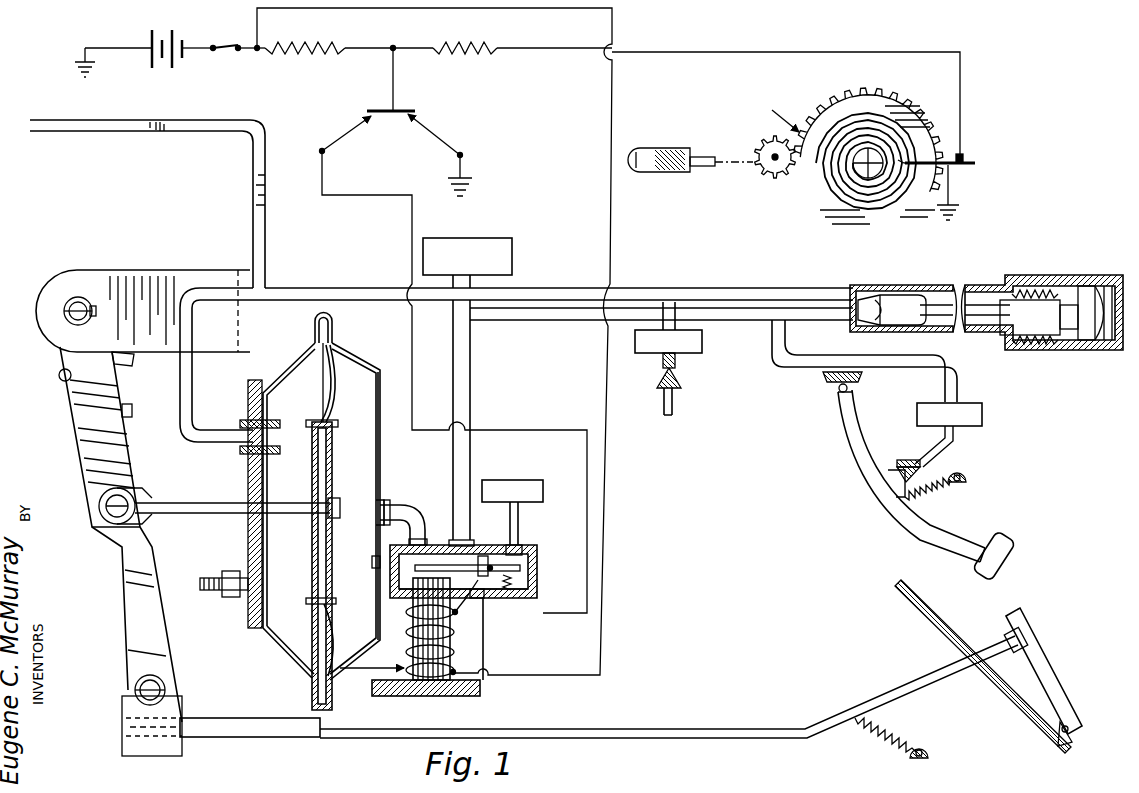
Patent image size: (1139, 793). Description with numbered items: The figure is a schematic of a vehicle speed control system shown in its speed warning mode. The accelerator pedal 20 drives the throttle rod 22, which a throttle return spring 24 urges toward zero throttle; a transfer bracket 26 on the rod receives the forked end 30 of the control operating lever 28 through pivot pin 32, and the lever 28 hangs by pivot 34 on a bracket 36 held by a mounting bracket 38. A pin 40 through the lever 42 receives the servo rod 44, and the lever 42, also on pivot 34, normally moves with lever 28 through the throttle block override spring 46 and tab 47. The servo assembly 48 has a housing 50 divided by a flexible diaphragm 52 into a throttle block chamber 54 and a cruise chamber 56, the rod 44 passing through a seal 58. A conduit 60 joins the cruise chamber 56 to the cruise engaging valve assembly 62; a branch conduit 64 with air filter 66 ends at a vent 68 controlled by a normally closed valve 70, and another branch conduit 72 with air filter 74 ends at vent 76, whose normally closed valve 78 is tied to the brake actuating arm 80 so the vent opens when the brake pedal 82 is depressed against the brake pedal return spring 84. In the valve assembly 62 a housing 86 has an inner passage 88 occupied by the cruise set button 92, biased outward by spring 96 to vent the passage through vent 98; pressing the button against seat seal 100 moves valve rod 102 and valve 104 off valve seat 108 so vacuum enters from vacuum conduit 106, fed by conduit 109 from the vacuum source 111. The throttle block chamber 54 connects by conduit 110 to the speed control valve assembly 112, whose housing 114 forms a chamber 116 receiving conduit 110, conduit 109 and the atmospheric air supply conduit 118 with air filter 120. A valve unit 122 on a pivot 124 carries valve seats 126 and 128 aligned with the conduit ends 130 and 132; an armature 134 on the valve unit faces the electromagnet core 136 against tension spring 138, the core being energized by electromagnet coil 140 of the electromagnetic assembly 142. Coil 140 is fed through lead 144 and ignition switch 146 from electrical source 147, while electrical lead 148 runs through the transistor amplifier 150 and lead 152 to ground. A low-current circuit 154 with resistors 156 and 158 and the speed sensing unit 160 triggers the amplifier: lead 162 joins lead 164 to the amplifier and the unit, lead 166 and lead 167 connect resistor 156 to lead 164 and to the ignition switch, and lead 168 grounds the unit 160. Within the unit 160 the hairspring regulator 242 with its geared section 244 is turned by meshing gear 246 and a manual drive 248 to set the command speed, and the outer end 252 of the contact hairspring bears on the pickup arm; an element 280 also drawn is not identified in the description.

The accelerator pedal 20 is at (1032, 641).
The throttle rod 22 is at (882, 702).
The throttle return spring 24 is at (878, 741).
The transfer bracket 26 is at (178, 713).
The control operating lever 28 is at (160, 631).
The forked end 30 is at (182, 718).
The pivot pin 32 is at (158, 684).
The pivot pin 34 is at (70, 302).
The bracket 36 is at (197, 270).
The mounting bracket 38 is at (256, 181).
The pin 40 is at (110, 494).
The lever 42 is at (95, 438).
The servo rod 44 is at (196, 520).
The throttle block override spring 46 is at (130, 366).
The tab 47 is at (133, 416).
The servo assembly 48 is at (360, 351).
The housing 50 is at (285, 646).
The flexible diaphragm 52 is at (335, 393).
The throttle block chamber 54 is at (381, 466).
The cruise chamber 56 is at (283, 368).
The seal 58 is at (250, 493).
The conduit 60 is at (686, 288).
The cruise engaging valve assembly 62 is at (1010, 275).
The branch conduit 64 is at (680, 367).
The air filter 66 is at (645, 354).
The vent 68 is at (683, 383).
The normally closed valve 70 is at (672, 399).
The branch conduit 72 is at (796, 363).
The air filter 74 is at (975, 427).
The vent 76 is at (908, 460).
The normally closed valve 78 is at (900, 470).
The brake actuating arm 80 is at (882, 507).
The brake pedal 82 is at (1010, 548).
The brake pedal return spring 84 is at (945, 491).
The housing 86 is at (958, 289).
The inner passage 88 is at (1003, 336).
The cruise set button 92 is at (1085, 344).
The spring 96 is at (1028, 290).
The vent 98 is at (1101, 278).
The seat seal 100 is at (1052, 347).
The valve rod 102 is at (960, 323).
The valve 104 is at (890, 293).
The vacuum conduit 106 is at (503, 320).
The valve seat 108 is at (922, 296).
The conduit 109 is at (471, 379).
The conduit 110 is at (408, 512).
The vacuum source 111 is at (478, 240).
The speed control valve assembly 112 is at (542, 557).
The housing 114 is at (538, 598).
The chamber 116 is at (522, 599).
The atmospheric air supply conduit 118 is at (520, 513).
The air filter 120 is at (504, 480).
The valve unit 122 is at (490, 565).
The pivot 124 is at (488, 556).
The valve seat 126 is at (456, 615).
The valve seat 128 is at (527, 570).
The conduit end 130 is at (440, 541).
The conduit end 132 is at (522, 548).
The armature 134 is at (376, 566).
The electromagnet core 136 is at (404, 609).
The tension spring 138 is at (506, 592).
The electromagnet coil 140 is at (405, 635).
The electromagnetic assembly 142 is at (372, 688).
The lead 144 is at (257, 14).
The ignition switch 146 is at (222, 50).
The electrical source 147 is at (150, 44).
The electrical lead 148 is at (322, 179).
The electronic transistor type amplifier 150 is at (387, 119).
The lead 152 is at (447, 139).
The electrical circuit 154 is at (533, 47).
The resistor 156 is at (322, 52).
The resistor 158 is at (460, 53).
The speed sensing unit 160 is at (774, 113).
The lead 162 is at (692, 52).
The lead 164 is at (396, 87).
The lead 166 is at (393, 45).
The lead 167 is at (266, 48).
The lead 168 is at (953, 206).
The hairspring regulator 242 is at (812, 220).
The geared section 244 is at (838, 97).
The meshing gear 246 is at (760, 177).
The manual drive 248 is at (700, 150).
The outer end 252 is at (968, 167).
The contact 280 is at (964, 162).